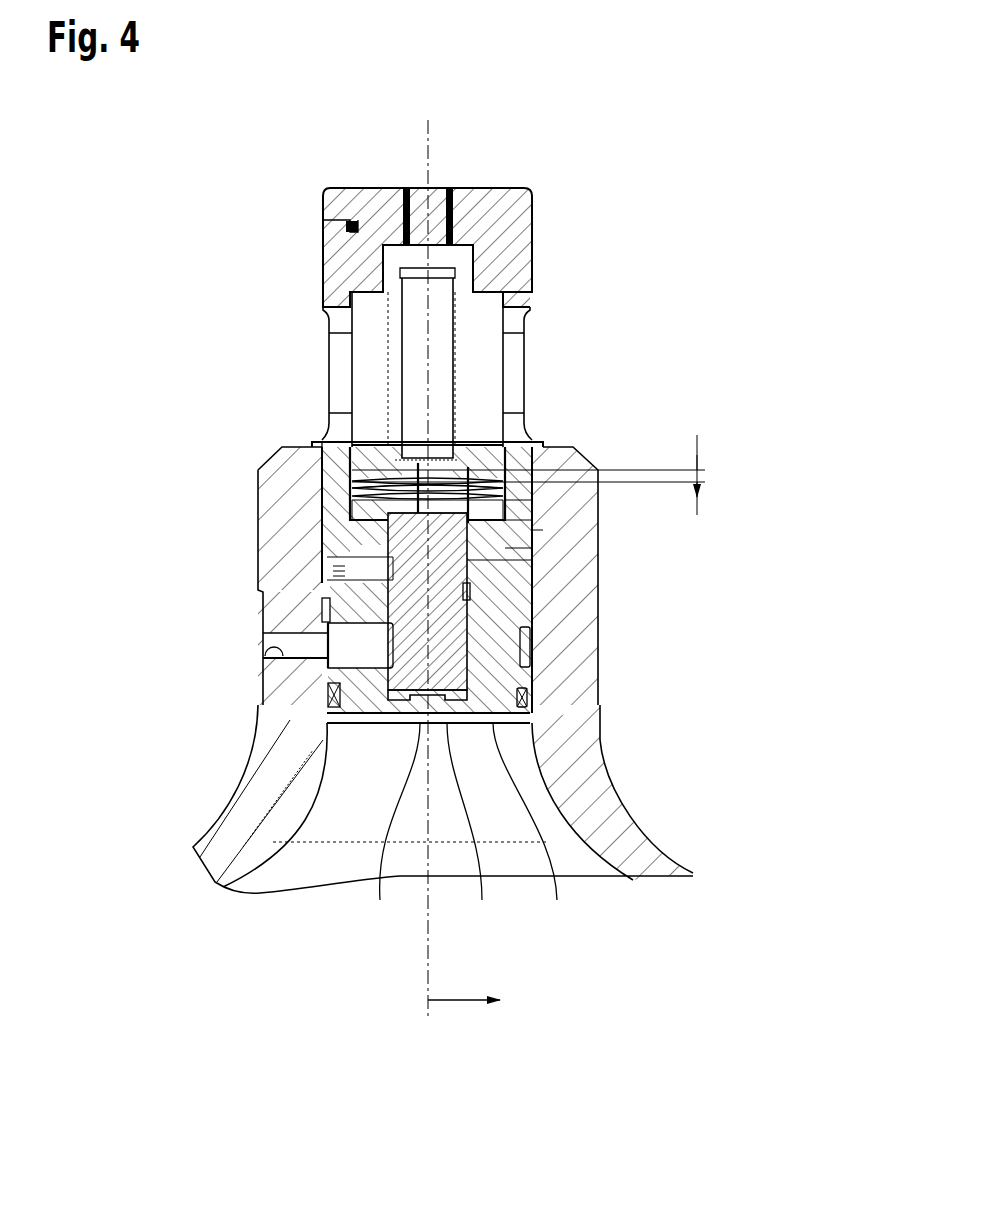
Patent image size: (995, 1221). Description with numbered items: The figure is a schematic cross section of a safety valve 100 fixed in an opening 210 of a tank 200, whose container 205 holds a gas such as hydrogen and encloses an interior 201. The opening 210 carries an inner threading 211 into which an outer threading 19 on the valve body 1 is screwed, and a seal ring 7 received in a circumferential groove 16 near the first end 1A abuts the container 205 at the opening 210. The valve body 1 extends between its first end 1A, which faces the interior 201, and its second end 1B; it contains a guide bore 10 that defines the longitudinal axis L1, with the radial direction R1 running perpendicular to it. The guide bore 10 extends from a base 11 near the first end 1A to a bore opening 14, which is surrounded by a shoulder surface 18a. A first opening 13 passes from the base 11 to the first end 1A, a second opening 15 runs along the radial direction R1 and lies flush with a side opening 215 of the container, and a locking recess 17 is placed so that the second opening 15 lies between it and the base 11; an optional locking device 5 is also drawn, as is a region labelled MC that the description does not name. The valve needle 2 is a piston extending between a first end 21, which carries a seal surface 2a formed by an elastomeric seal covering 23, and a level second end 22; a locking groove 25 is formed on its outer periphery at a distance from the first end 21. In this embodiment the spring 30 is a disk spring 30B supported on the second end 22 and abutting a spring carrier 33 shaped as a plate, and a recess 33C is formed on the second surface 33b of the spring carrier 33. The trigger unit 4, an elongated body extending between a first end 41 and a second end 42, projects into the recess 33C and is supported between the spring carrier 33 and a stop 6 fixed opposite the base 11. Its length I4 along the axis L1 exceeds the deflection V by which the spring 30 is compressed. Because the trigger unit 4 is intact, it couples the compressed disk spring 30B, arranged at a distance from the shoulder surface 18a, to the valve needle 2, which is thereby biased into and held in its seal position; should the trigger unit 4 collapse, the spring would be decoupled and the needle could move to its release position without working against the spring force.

The safety valve 100 is at (297, 167).
The tank 200 is at (152, 329).
The longitudinal axis L1 is at (432, 128).
The second end 1B is at (340, 222).
The stop 6 is at (522, 198).
The first end 41 is at (456, 271).
The trigger unit 4 is at (440, 333).
The second end 42 is at (437, 455).
The recess 33C is at (458, 456).
The spring carrier 33 is at (482, 446).
The second surface 33b is at (377, 439).
The length I4 is at (381, 367).
The valve body 1 is at (313, 463).
The spring 30 is at (352, 493).
The disk spring 30B is at (427, 486).
The bore opening 14 is at (350, 506).
The guide bore 10 is at (400, 536).
The valve needle 2 is at (322, 540).
The locking device 5 is at (312, 569).
The pressure chamber MC is at (359, 572).
The locking recess 17 is at (325, 595).
The second opening 15 is at (348, 623).
The side opening 215 is at (275, 652).
The seal covering 23 is at (330, 703).
The base 11 is at (325, 716).
The shoulder surface 18a is at (520, 500).
The outer threading 19 is at (533, 531).
The inner threading 211 is at (533, 548).
The second end 22 is at (476, 577).
The opening 210 is at (533, 600).
The locking groove 25 is at (471, 597).
The first end 21 is at (530, 666).
The seal ring 7 is at (535, 697).
The circumferential groove 16 is at (533, 703).
The container 205 is at (605, 796).
The first opening 13 is at (392, 828).
The seal surface 2a is at (471, 828).
The first end 1A is at (534, 828).
The interior 201 is at (298, 968).
The radial direction R1 is at (462, 1003).
The deflection V is at (700, 500).